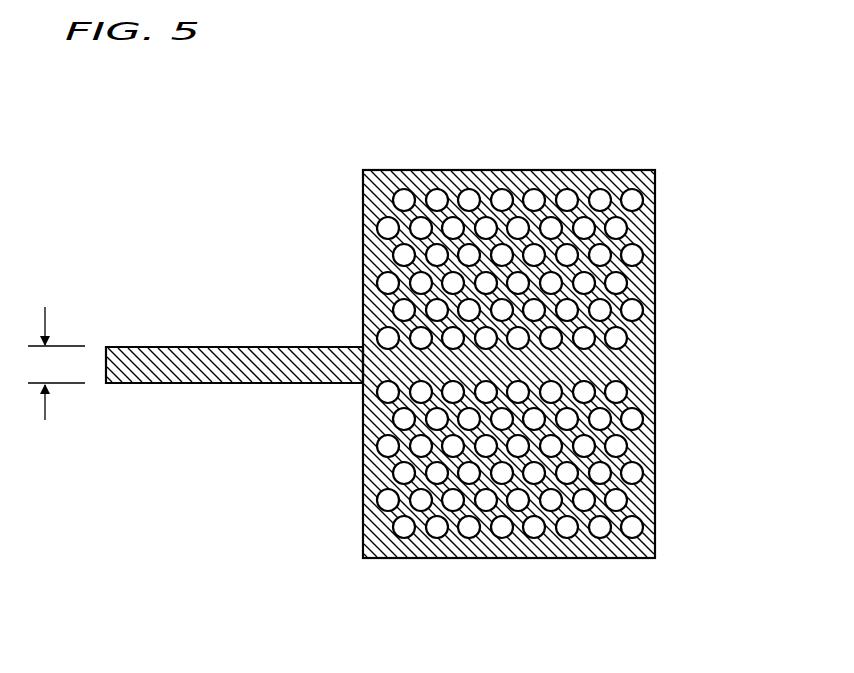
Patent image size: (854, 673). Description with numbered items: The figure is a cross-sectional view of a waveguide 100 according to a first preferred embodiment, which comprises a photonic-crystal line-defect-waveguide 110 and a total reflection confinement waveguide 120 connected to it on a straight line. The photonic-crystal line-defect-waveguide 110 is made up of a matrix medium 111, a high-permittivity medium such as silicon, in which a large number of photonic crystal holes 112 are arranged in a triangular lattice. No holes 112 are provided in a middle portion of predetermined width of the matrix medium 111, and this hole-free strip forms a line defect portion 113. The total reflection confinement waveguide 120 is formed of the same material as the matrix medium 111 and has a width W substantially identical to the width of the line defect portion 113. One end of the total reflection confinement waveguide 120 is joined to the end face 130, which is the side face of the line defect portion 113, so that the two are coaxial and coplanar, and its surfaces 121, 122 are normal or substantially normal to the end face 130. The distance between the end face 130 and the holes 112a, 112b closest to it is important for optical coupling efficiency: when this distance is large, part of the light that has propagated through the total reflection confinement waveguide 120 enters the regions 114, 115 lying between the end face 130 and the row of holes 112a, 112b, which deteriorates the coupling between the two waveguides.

The waveguide 100 is at (665, 203).
The photonic-crystal line-defect-waveguide 110 is at (524, 373).
The matrix medium 111 is at (426, 176).
The photonic crystal holes 112 is at (632, 311).
The hole 112a is at (386, 336).
The hole 112b is at (387, 393).
The line defect portion 113 is at (640, 367).
The region 114 is at (362, 330).
The region 115 is at (363, 395).
The total reflection confinement waveguide 120 is at (193, 373).
The surface 121 is at (163, 346).
The surface 122 is at (170, 383).
The end face 130 is at (276, 324).